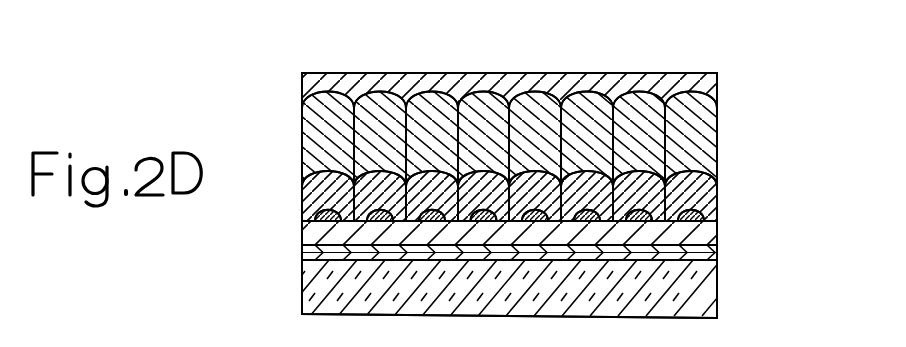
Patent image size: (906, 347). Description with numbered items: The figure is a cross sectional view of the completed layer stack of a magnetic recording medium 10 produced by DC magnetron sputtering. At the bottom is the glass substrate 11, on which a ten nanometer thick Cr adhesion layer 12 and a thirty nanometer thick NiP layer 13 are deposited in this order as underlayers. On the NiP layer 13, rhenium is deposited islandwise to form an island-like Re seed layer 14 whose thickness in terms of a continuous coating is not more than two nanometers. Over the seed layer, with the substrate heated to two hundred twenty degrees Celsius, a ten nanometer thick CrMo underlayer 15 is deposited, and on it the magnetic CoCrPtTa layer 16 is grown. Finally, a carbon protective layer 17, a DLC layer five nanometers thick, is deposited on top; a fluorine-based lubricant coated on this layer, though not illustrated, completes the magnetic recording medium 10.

The magnetic recording medium 10 is at (271, 61).
The glass substrate 11 is at (705, 300).
The Cr adhesion layer 12 is at (705, 257).
The NiP layer 13 is at (705, 240).
The island-like Re seed layer 14 is at (705, 218).
The CrMo underlayer 15 is at (705, 190).
The CoCrPtTa layer 16 is at (705, 140).
The carbon protective layer 17 is at (705, 82).